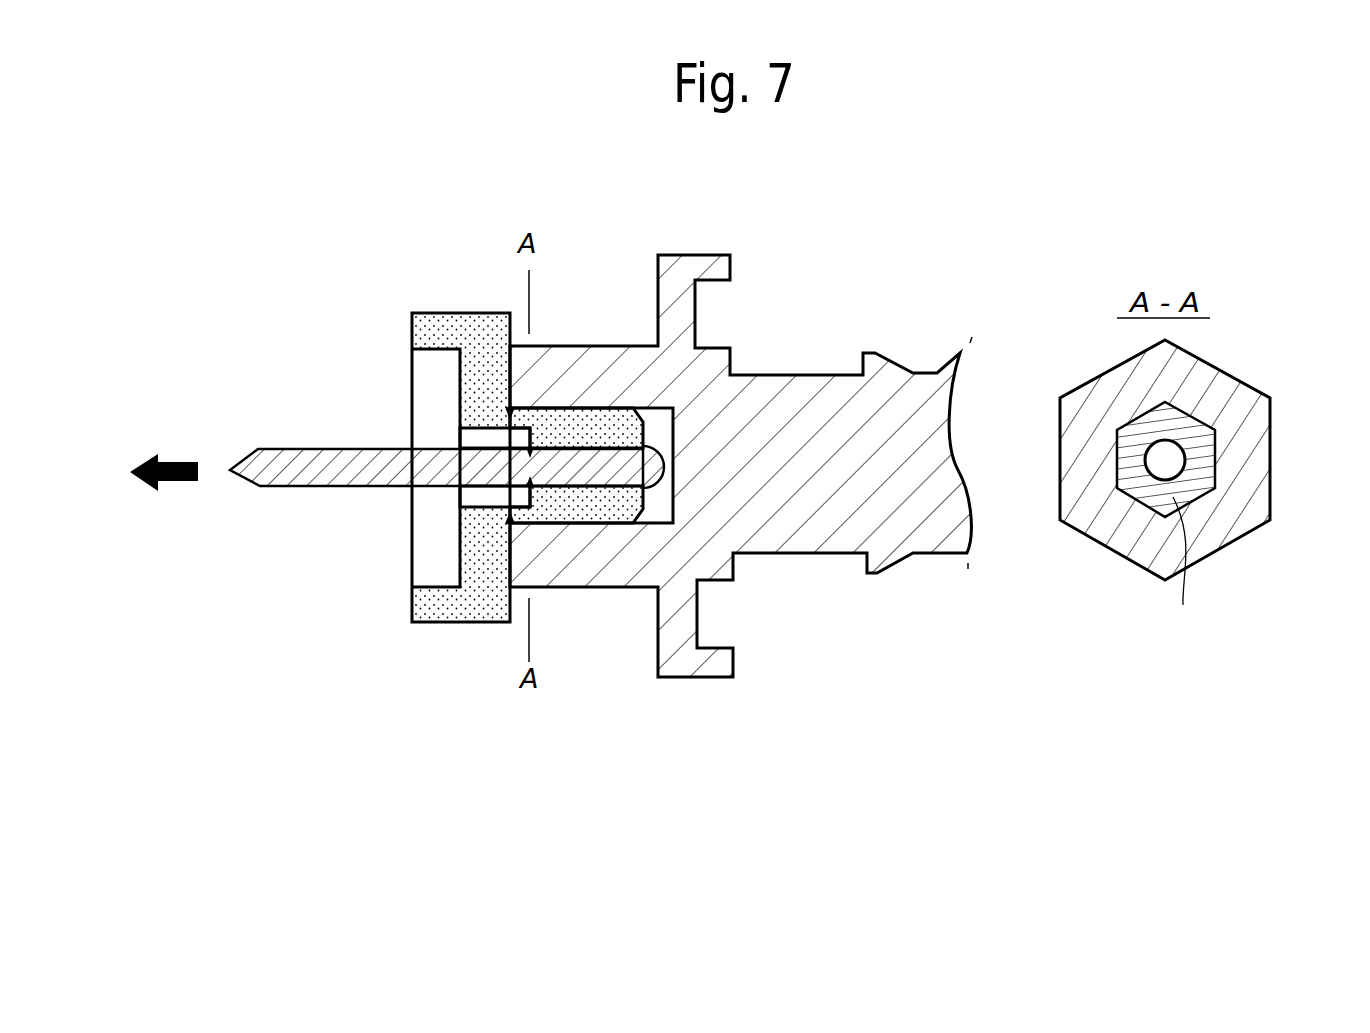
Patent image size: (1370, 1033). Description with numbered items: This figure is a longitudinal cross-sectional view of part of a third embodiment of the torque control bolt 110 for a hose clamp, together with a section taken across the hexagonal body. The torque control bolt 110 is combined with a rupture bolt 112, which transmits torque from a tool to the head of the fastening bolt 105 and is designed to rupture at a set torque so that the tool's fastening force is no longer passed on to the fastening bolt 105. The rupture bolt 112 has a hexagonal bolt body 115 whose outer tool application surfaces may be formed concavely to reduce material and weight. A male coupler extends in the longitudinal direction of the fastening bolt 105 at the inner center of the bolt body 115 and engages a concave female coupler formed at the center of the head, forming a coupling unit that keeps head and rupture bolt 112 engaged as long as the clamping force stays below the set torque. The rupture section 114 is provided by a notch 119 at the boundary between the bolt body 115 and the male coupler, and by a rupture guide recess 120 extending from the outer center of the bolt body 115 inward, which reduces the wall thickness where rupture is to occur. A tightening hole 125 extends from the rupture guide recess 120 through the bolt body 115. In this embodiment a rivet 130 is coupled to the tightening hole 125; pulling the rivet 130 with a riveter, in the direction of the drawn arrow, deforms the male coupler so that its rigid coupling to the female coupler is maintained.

The fastening bolt 105 is at (943, 563).
The torque control bolt 110 is at (360, 630).
The rupture bolt 112 is at (489, 632).
The rupture section 114 is at (388, 490).
The bolt body 115 is at (432, 623).
The notch 119 is at (512, 518).
The rupture guide recess 120 is at (463, 493).
The tightening hole 125 is at (1168, 465).
The rivet 130 is at (302, 463).